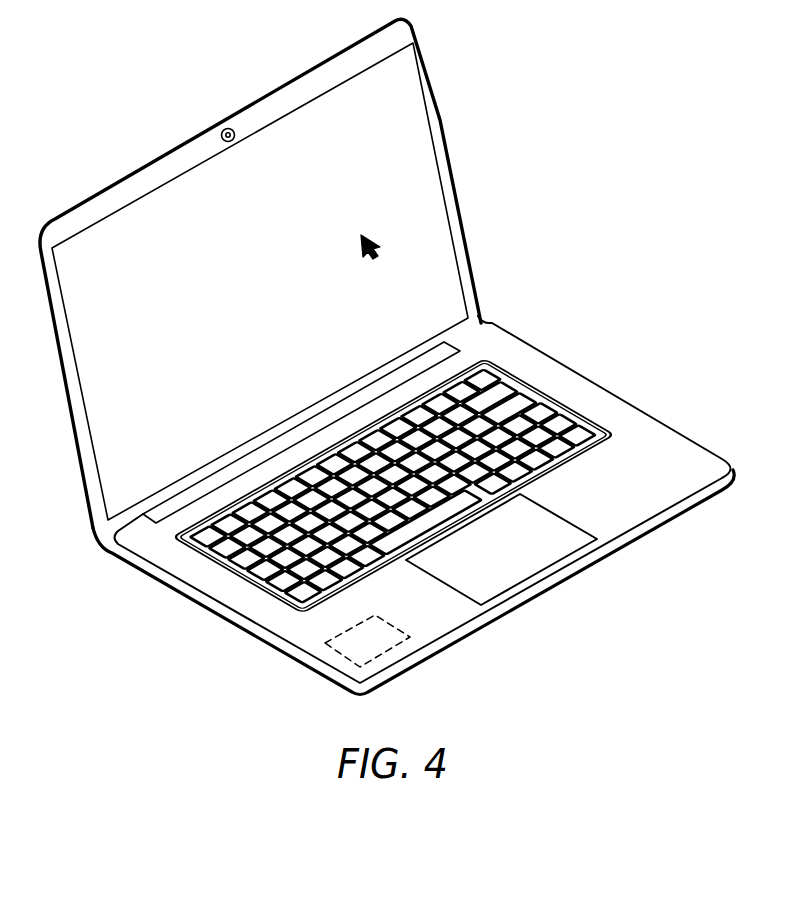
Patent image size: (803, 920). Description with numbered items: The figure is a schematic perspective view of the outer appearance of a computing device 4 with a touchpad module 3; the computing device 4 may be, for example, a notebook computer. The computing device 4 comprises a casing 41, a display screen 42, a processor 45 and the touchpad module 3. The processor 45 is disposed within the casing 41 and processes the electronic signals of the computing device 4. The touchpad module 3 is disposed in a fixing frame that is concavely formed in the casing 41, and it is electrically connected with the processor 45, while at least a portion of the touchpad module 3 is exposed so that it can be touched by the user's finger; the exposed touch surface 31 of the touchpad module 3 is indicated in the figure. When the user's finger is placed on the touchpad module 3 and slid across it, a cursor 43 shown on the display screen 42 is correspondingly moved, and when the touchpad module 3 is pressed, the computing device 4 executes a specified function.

The computing device 4 is at (387, 362).
The casing 41 is at (661, 463).
The display screen 42 is at (415, 105).
The cursor 43 is at (372, 236).
The touchpad module 3 is at (520, 572).
The touch surface 31 is at (500, 574).
The processor 45 is at (357, 650).